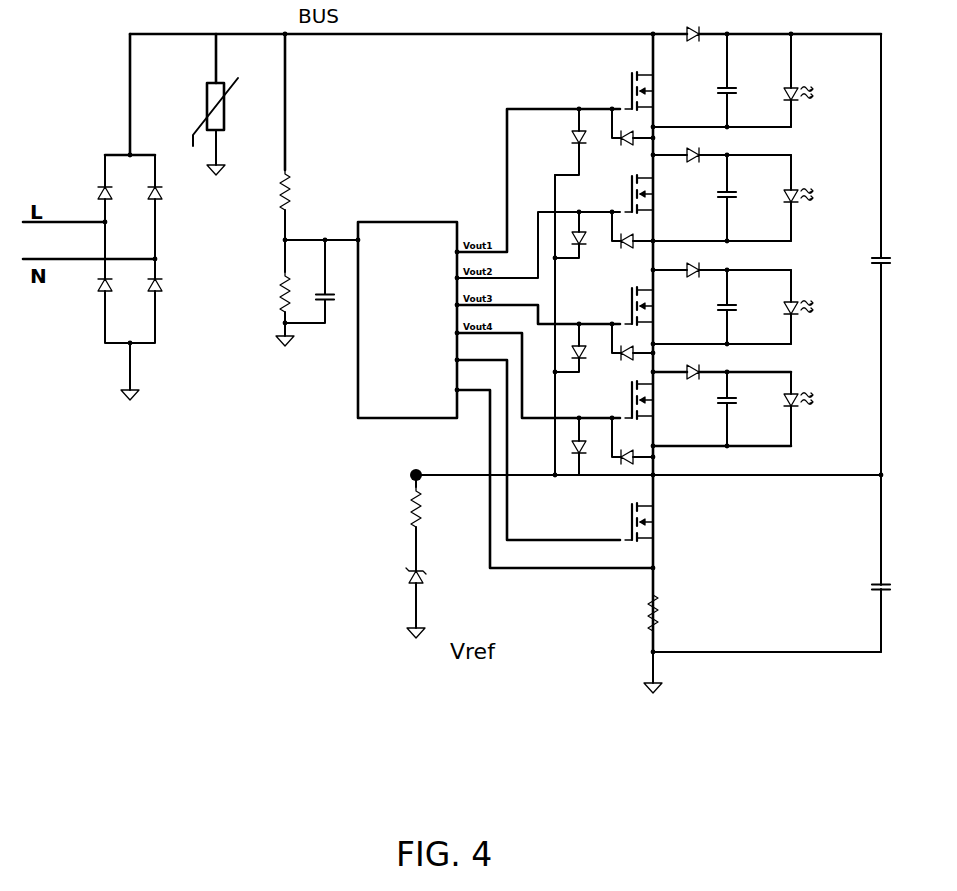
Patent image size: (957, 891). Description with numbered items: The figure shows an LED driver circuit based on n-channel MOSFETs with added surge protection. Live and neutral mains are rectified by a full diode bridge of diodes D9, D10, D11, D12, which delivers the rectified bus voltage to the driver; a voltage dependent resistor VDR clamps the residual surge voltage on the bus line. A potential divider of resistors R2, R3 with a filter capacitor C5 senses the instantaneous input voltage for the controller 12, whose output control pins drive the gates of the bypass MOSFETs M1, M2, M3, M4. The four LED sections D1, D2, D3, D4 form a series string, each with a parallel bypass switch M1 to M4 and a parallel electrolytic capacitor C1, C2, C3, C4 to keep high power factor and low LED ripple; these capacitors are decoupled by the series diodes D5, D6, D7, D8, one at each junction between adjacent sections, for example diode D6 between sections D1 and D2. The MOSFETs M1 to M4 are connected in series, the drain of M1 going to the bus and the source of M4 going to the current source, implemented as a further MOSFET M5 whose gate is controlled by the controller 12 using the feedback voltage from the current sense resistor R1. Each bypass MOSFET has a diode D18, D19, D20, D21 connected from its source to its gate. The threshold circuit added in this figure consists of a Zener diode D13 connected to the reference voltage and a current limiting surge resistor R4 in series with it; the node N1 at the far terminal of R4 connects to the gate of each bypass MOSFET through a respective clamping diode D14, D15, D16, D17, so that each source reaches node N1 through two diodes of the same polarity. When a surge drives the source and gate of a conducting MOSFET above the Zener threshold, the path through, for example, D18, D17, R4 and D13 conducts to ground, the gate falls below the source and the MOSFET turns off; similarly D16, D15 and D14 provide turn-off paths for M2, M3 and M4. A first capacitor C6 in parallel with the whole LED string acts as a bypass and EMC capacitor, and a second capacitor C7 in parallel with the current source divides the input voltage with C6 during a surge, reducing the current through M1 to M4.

The controller 12 is at (405, 222).
The voltage dependent resistor VDR is at (234, 112).
The node N1 is at (412, 473).
The diode D9 is at (111, 185).
The diode D10 is at (114, 280).
The diode D11 is at (164, 185).
The diode D12 is at (164, 280).
The current sense resistor R1 is at (660, 611).
The potential divider resistor R2 is at (292, 190).
The potential divider resistor R3 is at (292, 292).
The current limiting resistor R4 is at (423, 507).
The electrolytic capacitor C1 is at (730, 82).
The electrolytic capacitor C2 is at (730, 186).
The electrolytic capacitor C3 is at (730, 298).
The electrolytic capacitor C4 is at (730, 391).
The filter capacitor C5 is at (329, 291).
The first capacitor C6 is at (885, 253).
The second capacitor C7 is at (885, 581).
The LED section D1 is at (805, 78).
The LED section D2 is at (805, 181).
The LED section D3 is at (805, 293).
The LED section D4 is at (805, 386).
The decoupling diode D5 is at (694, 29).
The decoupling diode D6 is at (694, 157).
The decoupling diode D7 is at (694, 272).
The decoupling diode D8 is at (694, 374).
The Zener diode D13 is at (409, 570).
The clamping diode D14 is at (588, 438).
The clamping diode D15 is at (588, 343).
The clamping diode D16 is at (588, 230).
The clamping diode D17 is at (588, 128).
The source-gate diode D18 is at (628, 129).
The source-gate diode D19 is at (628, 232).
The source-gate diode D20 is at (628, 344).
The source-gate diode D21 is at (628, 449).
The bypass MOSFET M1 is at (648, 91).
The bypass MOSFET M2 is at (648, 194).
The bypass MOSFET M3 is at (648, 306).
The bypass MOSFET M4 is at (648, 400).
The current source MOSFET M5 is at (648, 522).